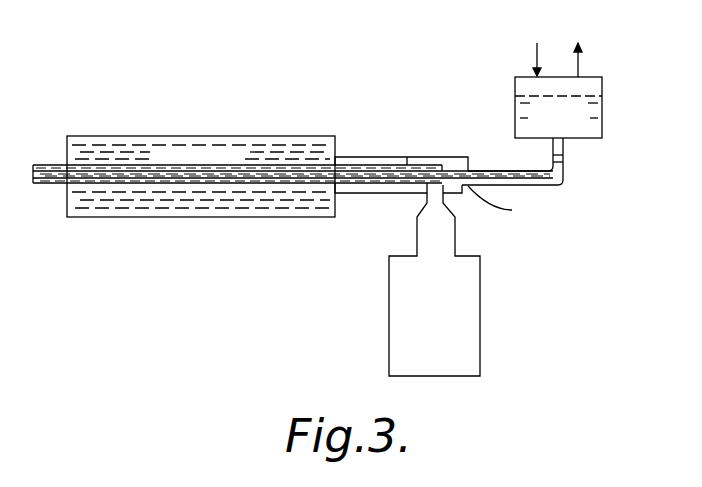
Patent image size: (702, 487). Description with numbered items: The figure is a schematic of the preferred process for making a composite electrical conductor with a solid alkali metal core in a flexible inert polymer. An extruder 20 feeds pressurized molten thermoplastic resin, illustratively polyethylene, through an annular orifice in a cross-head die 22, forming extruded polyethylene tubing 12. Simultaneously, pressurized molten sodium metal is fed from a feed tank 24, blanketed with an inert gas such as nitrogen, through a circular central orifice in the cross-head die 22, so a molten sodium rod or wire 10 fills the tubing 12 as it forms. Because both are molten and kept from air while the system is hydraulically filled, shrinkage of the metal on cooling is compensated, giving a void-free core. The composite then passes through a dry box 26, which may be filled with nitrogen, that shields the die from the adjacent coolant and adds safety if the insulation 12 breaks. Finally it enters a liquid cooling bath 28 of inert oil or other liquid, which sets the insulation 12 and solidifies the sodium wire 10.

The sodium wire 10 is at (382, 178).
The extruded polyethylene tubing 12 is at (347, 184).
The extruder 20 is at (480, 278).
The cross-head die 22 is at (462, 190).
The feed tank 24 is at (602, 88).
The dry box 26 is at (386, 157).
The cooling bath 28 is at (103, 208).